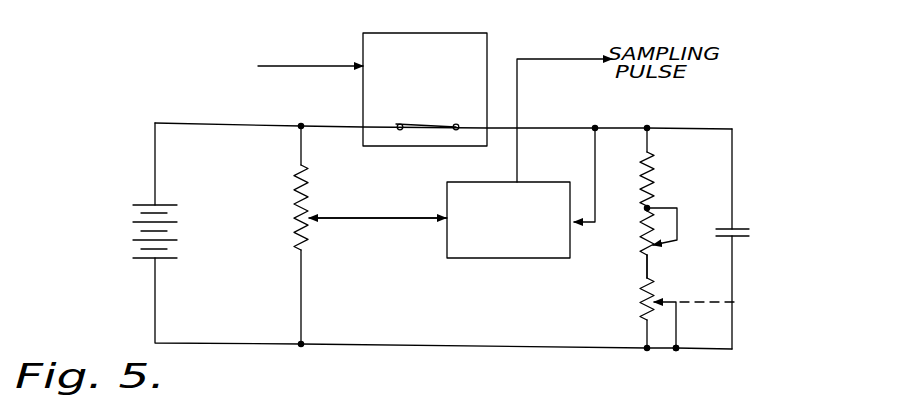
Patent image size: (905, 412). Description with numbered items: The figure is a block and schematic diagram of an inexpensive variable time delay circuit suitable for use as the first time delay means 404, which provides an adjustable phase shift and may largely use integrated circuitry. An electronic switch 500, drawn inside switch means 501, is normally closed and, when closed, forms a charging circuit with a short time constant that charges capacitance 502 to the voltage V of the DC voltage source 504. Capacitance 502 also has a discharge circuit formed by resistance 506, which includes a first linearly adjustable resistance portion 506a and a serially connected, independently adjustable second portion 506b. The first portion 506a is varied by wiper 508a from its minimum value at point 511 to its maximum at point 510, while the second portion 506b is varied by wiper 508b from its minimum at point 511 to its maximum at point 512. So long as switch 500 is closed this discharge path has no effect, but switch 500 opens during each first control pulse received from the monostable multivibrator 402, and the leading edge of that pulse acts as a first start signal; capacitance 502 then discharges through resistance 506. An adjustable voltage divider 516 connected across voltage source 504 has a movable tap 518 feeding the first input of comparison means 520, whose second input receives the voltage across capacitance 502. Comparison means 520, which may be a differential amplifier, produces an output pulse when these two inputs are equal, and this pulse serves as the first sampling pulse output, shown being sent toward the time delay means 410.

The monostable multivibrator 402 is at (214, 65).
The first time delay means 404 is at (415, 376).
The time delay means 410 is at (788, 341).
The electronic switch 500 is at (392, 120).
The switch means 501 is at (382, 33).
The capacitance 502 is at (738, 229).
The DC voltage source 504 is at (135, 221).
The resistance 506 is at (724, 174).
The first linearly adjustable resistance portion 506a is at (646, 242).
The second independently linearly adjustable resistance portion 506b is at (645, 292).
The wiper 508a is at (684, 241).
The wiper 508b is at (657, 303).
The point 510 is at (646, 205).
The point 511 is at (645, 275).
The point 512 is at (676, 350).
The adjustable voltage divider 516 is at (296, 190).
The movable tap 518 is at (318, 224).
The comparison means 520 is at (497, 258).